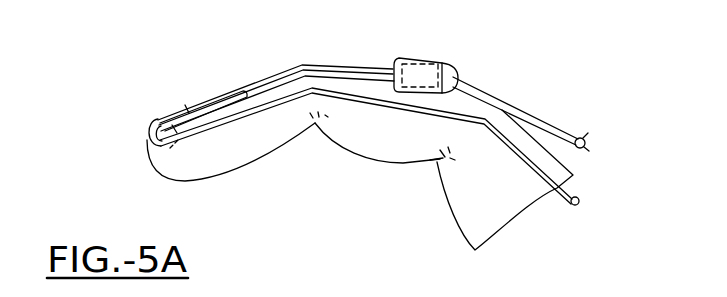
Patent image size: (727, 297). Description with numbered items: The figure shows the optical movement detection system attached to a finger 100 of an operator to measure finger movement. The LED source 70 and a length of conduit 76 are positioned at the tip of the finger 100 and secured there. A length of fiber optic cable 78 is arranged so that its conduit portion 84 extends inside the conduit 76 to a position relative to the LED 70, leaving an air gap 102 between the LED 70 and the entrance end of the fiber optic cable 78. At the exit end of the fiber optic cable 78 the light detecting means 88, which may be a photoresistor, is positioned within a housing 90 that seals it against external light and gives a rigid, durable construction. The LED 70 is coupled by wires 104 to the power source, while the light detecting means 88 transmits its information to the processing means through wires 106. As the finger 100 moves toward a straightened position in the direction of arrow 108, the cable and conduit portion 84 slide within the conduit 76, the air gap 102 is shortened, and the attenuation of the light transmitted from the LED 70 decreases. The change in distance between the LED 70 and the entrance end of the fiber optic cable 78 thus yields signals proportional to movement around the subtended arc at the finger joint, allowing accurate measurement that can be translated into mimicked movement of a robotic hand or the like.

The LED source 70 is at (150, 131).
The length of conduit 76 is at (193, 108).
The fiber optic cable 78 is at (303, 63).
The conduit portion 84 is at (183, 107).
The light detecting means 88 is at (447, 58).
The housing 90 is at (410, 60).
The finger 100 is at (403, 163).
The air gap 102 is at (170, 148).
The wires 104 is at (575, 207).
The wires 106 is at (584, 137).
The arrow 108 is at (193, 185).